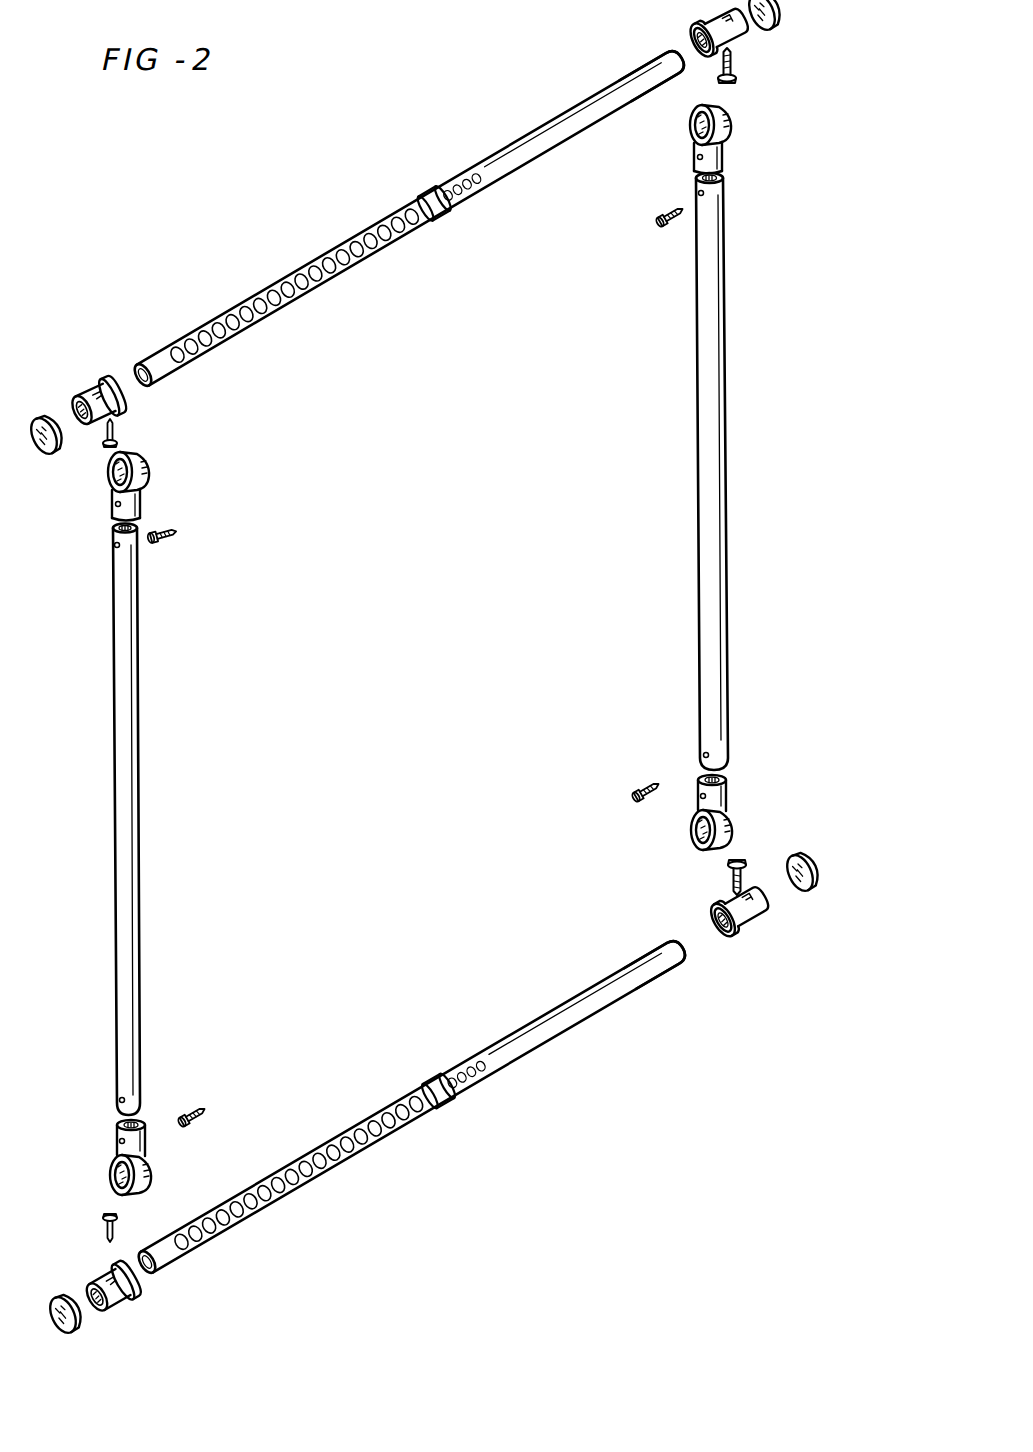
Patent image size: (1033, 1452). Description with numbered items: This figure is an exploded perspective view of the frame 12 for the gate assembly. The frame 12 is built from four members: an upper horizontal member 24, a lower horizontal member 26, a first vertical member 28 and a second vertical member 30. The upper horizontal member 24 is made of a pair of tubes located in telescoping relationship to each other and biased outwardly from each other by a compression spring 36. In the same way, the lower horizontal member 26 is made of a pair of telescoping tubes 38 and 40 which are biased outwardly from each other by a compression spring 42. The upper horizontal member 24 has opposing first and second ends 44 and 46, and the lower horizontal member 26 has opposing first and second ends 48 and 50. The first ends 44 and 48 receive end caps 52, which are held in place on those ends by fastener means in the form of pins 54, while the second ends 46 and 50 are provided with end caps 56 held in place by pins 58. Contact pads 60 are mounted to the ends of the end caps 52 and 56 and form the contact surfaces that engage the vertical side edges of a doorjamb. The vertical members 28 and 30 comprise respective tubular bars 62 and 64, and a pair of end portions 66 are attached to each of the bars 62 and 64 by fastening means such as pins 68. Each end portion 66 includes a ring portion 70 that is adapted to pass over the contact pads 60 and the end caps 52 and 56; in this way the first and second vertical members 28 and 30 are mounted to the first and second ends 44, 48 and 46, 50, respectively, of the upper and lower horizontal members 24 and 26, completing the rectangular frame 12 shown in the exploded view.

The frame 12 is at (244, 286).
The upper horizontal member 24 is at (482, 158).
The lower horizontal member 26 is at (448, 1112).
The first vertical member 28 is at (109, 748).
The second vertical member 30 is at (729, 417).
The compression spring 36 is at (330, 234).
The telescoping tube 38 is at (330, 1140).
The telescoping tube 40 is at (533, 972).
The compression spring 42 is at (395, 1145).
The first end 44 is at (145, 365).
The second end 46 is at (655, 52).
The first end 48 is at (210, 1258).
The second end 50 is at (668, 965).
The end cap 52 is at (100, 376).
The pin 54 is at (118, 432).
The end cap 56 is at (692, 30).
The pin 58 is at (738, 75).
The contact pad 60 is at (779, 18).
The tubular bar 62 is at (137, 812).
The tubular bar 64 is at (724, 330).
The end portion 66 is at (730, 146).
The pin 68 is at (662, 222).
The ring portion 70 is at (690, 130).